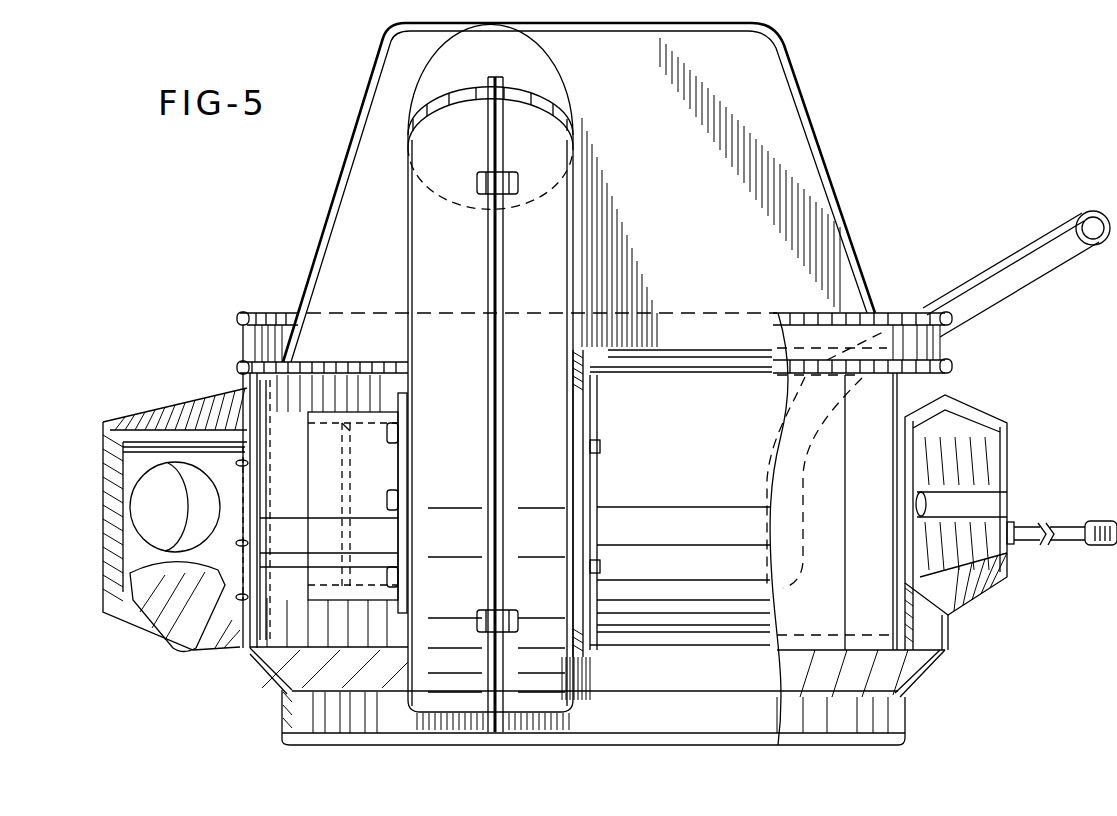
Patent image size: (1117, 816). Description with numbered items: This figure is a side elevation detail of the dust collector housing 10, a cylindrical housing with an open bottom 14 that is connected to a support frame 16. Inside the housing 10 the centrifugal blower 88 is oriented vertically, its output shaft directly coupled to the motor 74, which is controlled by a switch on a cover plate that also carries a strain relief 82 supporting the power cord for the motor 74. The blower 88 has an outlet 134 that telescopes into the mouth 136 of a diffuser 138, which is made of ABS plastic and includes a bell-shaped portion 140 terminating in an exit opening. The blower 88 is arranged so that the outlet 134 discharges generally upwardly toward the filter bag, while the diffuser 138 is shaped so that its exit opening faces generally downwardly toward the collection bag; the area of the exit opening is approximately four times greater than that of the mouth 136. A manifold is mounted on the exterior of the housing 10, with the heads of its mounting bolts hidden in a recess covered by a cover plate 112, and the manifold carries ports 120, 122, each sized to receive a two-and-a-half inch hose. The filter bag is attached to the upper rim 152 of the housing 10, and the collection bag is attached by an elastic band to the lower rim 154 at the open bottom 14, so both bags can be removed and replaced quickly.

The cylindrical housing 10 is at (945, 386).
The open bottom 14 is at (882, 317).
The support frame 16 is at (867, 745).
The motor 74 is at (990, 467).
The strain relief 82 is at (1072, 542).
The centrifugal blower 88 is at (430, 250).
The cover plate 112 is at (102, 548).
The port 120 is at (200, 505).
The port 122 is at (170, 618).
The outlet 134 is at (440, 142).
The mouth 136 is at (503, 57).
The diffuser 138 is at (826, 97).
The bell-shaped portion 140 is at (837, 160).
The upper rim 152 is at (946, 342).
The lower rim 154 is at (902, 715).